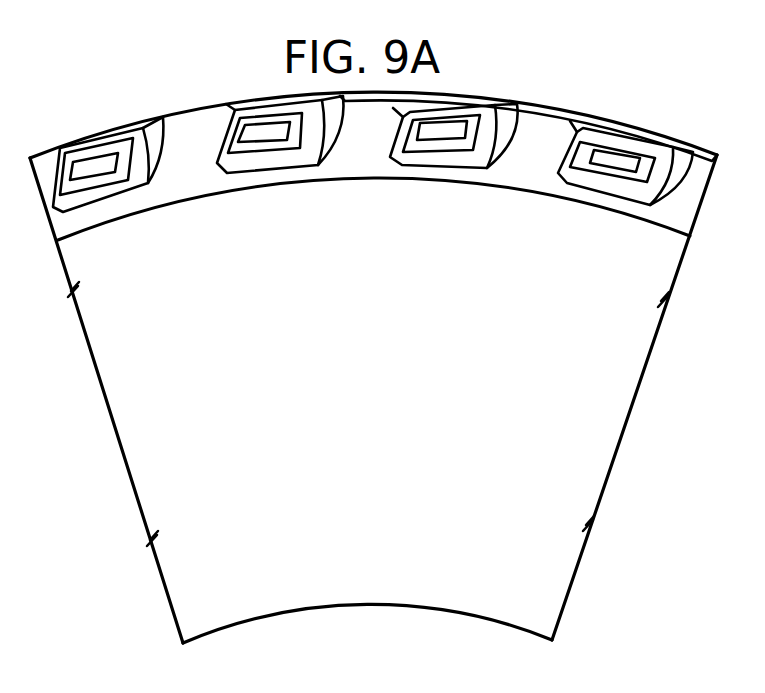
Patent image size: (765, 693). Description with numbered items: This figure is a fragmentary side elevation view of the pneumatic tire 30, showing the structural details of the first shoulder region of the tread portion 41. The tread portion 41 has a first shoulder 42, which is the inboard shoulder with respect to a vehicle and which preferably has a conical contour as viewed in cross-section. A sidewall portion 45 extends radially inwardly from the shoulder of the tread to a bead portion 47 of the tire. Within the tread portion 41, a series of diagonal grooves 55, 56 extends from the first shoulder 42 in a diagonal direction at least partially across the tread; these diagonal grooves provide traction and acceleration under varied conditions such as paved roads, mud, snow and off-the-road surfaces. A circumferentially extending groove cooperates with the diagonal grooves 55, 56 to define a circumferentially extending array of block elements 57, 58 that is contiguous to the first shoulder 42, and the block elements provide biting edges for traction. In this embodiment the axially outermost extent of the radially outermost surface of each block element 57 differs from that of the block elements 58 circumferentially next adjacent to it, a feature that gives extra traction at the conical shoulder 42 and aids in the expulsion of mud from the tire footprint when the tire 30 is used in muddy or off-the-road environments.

The pneumatic tire 30 is at (636, 94).
The tread portion 41 is at (186, 102).
The first shoulder 42 is at (263, 108).
The sidewall portion 45 is at (618, 377).
The bead portion 47 is at (482, 610).
The diagonal groove 55 is at (397, 123).
The diagonal groove 56 is at (497, 130).
The block element 57 is at (480, 108).
The block element 58 is at (550, 113).